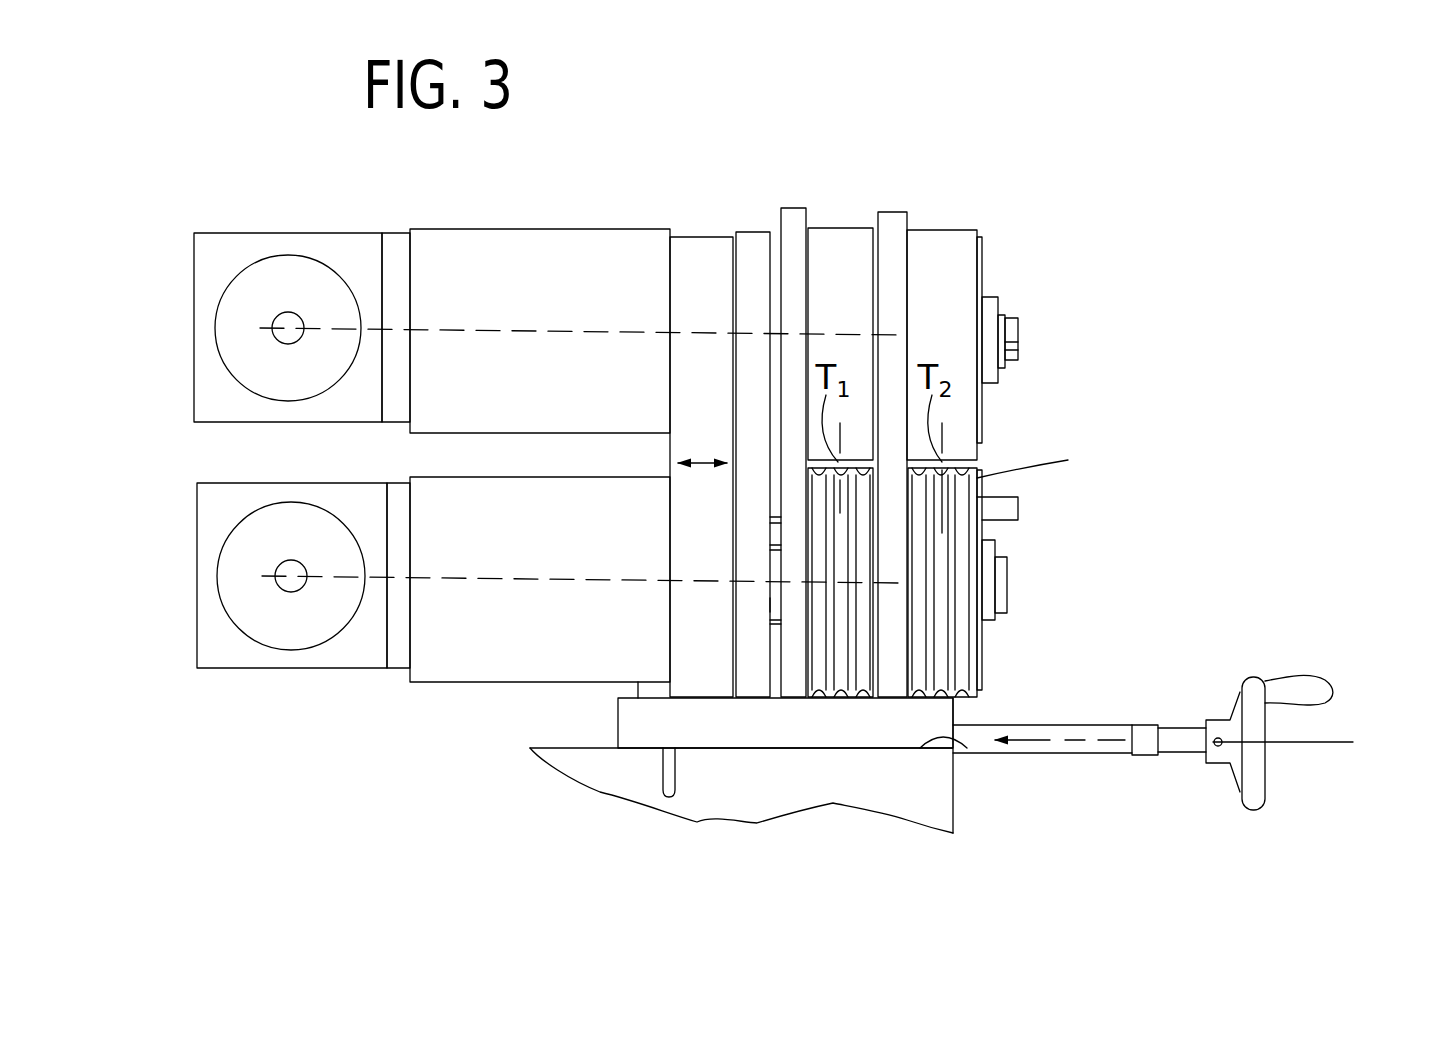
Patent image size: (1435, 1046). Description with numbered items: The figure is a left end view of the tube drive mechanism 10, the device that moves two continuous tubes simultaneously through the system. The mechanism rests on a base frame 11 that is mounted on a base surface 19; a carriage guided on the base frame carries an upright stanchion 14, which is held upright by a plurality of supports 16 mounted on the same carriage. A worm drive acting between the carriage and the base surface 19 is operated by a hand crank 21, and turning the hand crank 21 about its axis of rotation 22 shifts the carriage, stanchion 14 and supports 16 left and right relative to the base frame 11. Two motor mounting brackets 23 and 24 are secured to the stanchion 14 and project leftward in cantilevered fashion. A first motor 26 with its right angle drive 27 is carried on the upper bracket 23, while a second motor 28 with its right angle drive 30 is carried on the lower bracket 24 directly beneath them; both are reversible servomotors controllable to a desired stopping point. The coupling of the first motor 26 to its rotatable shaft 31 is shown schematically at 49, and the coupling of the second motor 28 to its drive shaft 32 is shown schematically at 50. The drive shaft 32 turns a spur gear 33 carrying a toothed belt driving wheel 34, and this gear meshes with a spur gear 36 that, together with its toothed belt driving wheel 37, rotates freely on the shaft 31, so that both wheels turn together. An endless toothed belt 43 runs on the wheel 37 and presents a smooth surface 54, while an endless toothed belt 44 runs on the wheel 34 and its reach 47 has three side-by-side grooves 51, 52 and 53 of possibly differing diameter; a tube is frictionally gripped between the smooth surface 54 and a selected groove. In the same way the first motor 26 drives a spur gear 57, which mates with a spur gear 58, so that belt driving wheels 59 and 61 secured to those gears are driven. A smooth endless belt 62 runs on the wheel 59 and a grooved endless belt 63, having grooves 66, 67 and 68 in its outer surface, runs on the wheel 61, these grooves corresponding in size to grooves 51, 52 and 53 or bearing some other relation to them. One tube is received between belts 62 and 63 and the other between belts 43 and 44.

The tube drive mechanism 10 is at (882, 152).
The base frame 11 is at (616, 727).
The upright stanchion 14 is at (748, 240).
The supports 16 is at (695, 233).
The base surface 19 is at (980, 755).
The hand crank 21 is at (1250, 673).
The axis of rotation 22 is at (1323, 742).
The motor mounting bracket 23 is at (532, 250).
The motor mounting bracket 24 is at (457, 653).
The first motor 26 is at (257, 300).
The right angle drive 27 is at (357, 262).
The second motor 28 is at (252, 607).
The right angle drive 30 is at (362, 652).
The rotatable shaft 31 is at (775, 317).
The drive shaft 32 is at (770, 600).
The spur gear 33 is at (895, 685).
The toothed belt driving wheel 34 is at (1018, 503).
The spur gear 36 is at (893, 328).
The toothed belt driving wheel 37 is at (980, 267).
The endless toothed belt 43 is at (949, 265).
The endless toothed belt 44 is at (977, 700).
The reach of belt 44 47 is at (1044, 456).
The schematic connection 49 is at (507, 330).
The schematic connection 50 is at (495, 570).
The groove 51 is at (925, 612).
The groove 52 is at (945, 642).
The groove 53 is at (965, 673).
The surface of belt 43 54 is at (932, 232).
The spur gear 57 is at (790, 225).
The spur gear 58 is at (795, 682).
The belt driving wheel 59 is at (887, 230).
The belt driving wheel 61 is at (829, 704).
The endless belt 62 is at (852, 235).
The endless belt 63 is at (867, 675).
The groove 66 is at (820, 498).
The groove 67 is at (840, 530).
The groove 68 is at (865, 555).